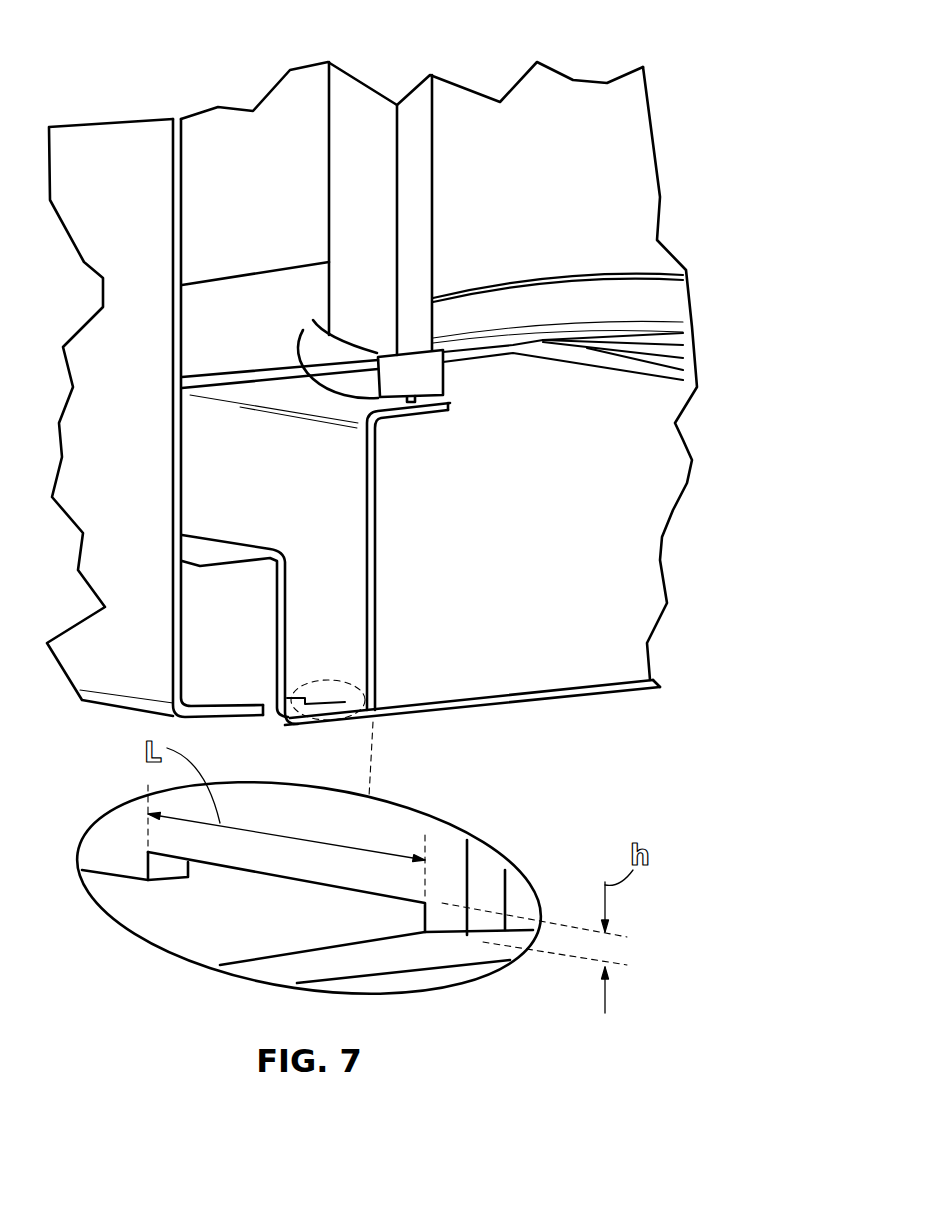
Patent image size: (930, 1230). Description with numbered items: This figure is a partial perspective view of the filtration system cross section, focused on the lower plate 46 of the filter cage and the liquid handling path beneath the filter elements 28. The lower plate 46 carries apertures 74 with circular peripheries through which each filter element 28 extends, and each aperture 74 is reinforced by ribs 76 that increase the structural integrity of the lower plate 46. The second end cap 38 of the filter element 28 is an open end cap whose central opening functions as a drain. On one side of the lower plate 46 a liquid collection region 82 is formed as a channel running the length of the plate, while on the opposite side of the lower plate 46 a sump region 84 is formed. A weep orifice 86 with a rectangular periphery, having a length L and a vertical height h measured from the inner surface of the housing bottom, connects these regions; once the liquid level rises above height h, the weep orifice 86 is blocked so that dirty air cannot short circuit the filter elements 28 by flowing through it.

The filter element 28 is at (358, 140).
The second end cap 38 is at (317, 327).
The lower plate 46 is at (323, 478).
The aperture 74 is at (470, 360).
The rib 76 is at (617, 373).
The liquid collection region 82 is at (267, 472).
The sump region 84 is at (557, 650).
The weep orifice 86 is at (335, 697).